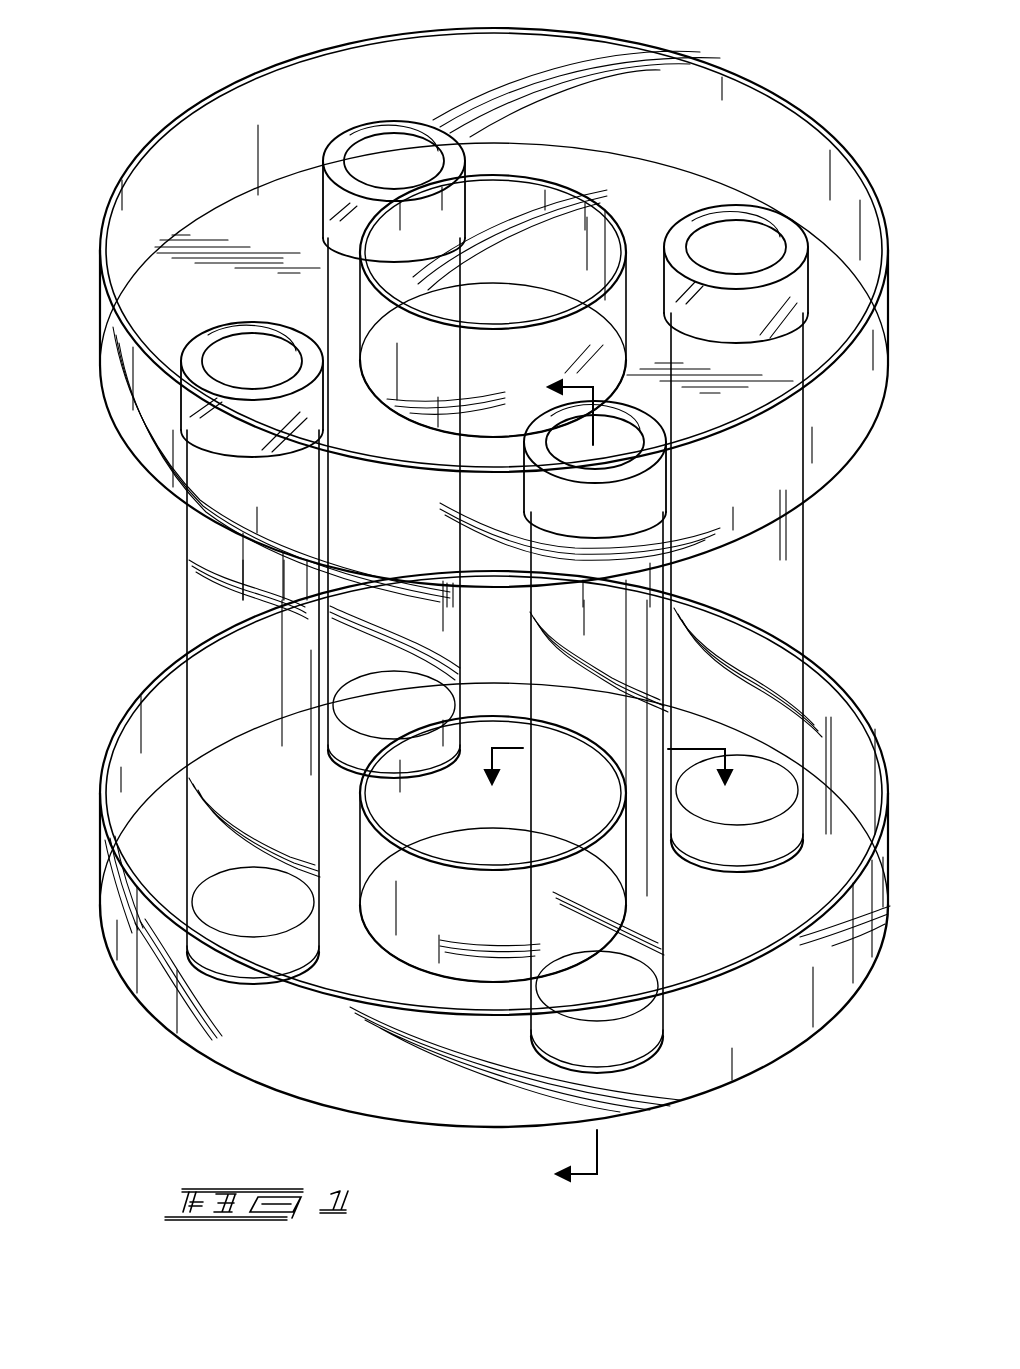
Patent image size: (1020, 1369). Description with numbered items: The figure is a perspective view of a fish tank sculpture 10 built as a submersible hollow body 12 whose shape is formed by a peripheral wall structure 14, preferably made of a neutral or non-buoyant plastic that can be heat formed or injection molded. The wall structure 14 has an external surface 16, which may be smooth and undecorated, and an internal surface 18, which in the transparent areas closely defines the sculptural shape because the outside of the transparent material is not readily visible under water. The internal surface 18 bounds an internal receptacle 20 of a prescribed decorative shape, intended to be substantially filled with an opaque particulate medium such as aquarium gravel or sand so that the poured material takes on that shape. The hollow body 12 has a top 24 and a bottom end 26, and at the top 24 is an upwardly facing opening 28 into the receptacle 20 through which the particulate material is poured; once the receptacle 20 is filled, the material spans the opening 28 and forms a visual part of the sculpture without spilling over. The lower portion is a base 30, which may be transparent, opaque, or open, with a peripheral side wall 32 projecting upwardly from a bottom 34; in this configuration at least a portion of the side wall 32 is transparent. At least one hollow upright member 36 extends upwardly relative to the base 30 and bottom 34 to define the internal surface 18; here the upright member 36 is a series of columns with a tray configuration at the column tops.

The holder assembly 10 is at (812, 53).
The submersible hollow body 12 is at (892, 325).
The peripheral wall structure 14 is at (808, 504).
The external surface 16 is at (157, 430).
The internal surface 18 is at (826, 180).
The internal receptacle 20 is at (212, 150).
The top 24 is at (97, 322).
The bottom end 26 is at (160, 987).
The top upwardly facing opening 28 is at (312, 52).
The base 30 is at (97, 875).
The peripheral side wall 32 is at (832, 983).
The bottom 34 is at (818, 762).
The hollow upright member 36 is at (176, 589).